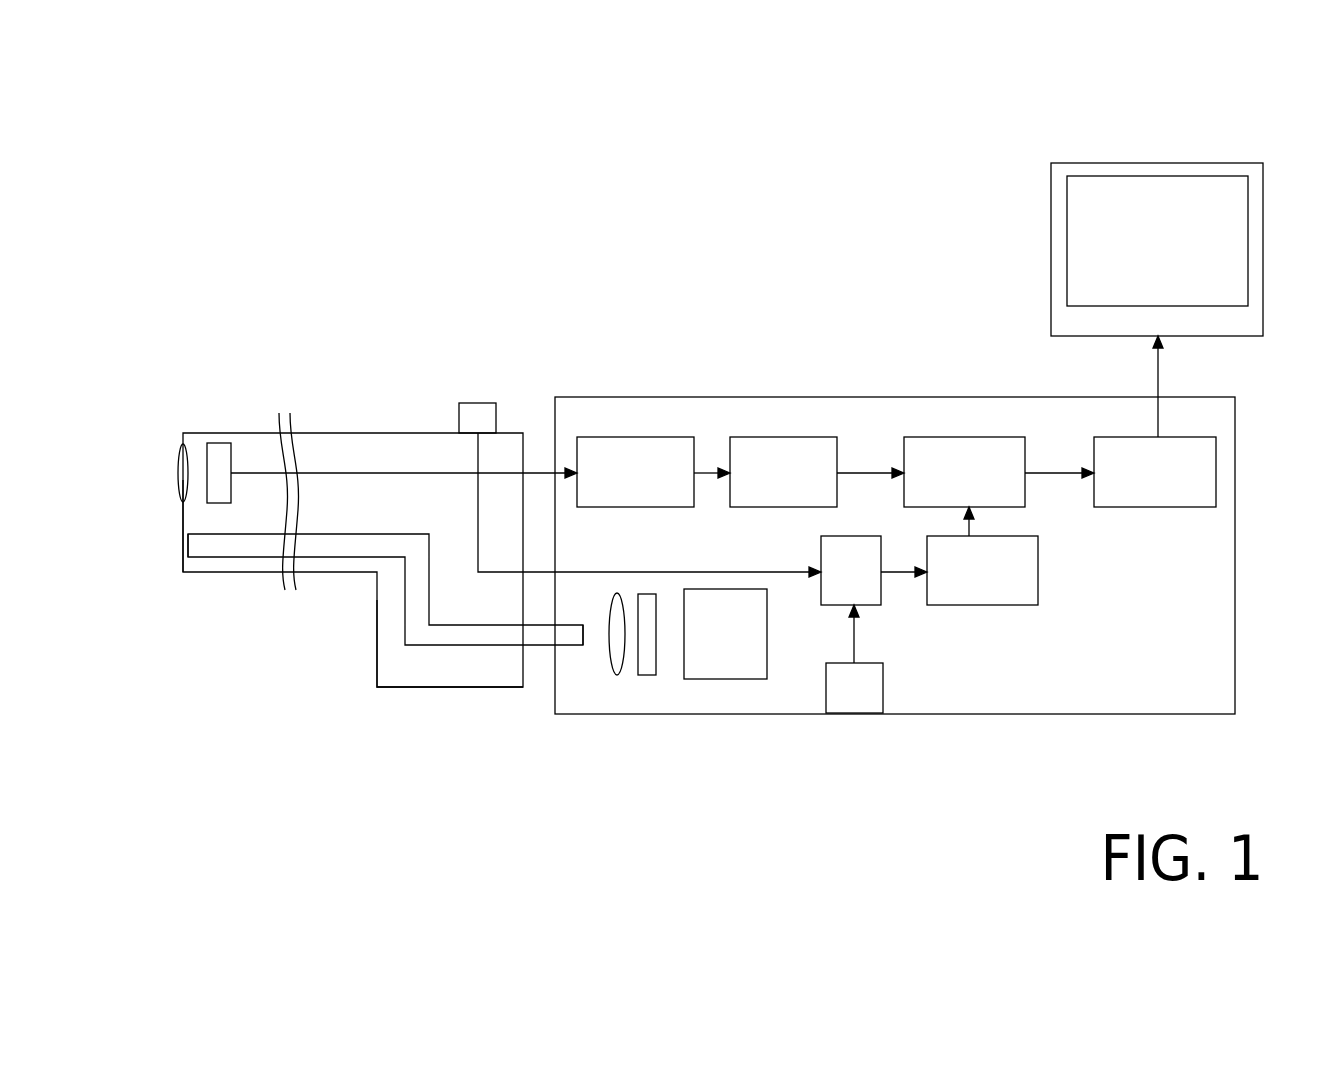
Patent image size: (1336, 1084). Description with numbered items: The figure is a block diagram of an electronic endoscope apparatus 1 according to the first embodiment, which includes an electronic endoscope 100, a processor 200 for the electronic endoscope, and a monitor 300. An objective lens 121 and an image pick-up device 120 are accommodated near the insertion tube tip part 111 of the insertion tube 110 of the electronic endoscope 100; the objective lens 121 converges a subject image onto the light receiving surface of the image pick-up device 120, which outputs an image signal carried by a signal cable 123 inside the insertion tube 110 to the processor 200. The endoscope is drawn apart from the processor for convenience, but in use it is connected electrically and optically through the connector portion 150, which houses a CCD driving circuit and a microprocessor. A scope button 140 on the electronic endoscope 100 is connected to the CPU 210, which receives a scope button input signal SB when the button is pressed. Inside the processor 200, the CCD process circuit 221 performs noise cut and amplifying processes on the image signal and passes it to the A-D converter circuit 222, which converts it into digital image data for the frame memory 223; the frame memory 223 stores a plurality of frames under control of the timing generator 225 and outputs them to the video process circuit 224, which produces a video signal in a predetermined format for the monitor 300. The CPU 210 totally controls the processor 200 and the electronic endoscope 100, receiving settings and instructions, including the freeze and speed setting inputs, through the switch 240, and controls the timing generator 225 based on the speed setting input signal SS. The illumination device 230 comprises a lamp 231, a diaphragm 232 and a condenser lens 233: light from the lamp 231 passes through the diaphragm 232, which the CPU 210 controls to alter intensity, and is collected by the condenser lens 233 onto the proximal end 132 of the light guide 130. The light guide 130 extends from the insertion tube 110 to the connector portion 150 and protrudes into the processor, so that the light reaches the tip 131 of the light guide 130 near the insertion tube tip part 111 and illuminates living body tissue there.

The electronic endoscope apparatus 1 is at (706, 298).
The electronic endoscope 100 is at (376, 420).
The insertion tube 110 is at (251, 433).
The insertion tube tip part 111 is at (183, 520).
The image pick-up device 120 is at (219, 443).
The objective lens 121 is at (172, 477).
The signal cable 123 is at (322, 472).
The light guide 130 is at (302, 558).
The tip of the light guide 131 is at (185, 547).
The proximal end of the light guide 132 is at (583, 636).
The scope button 140 is at (478, 403).
The connector portion 150 is at (452, 688).
The processor for the electronic endoscope 200 is at (851, 386).
The CPU 210 is at (882, 583).
The CCD process circuit 221 is at (632, 437).
The A-D converter circuit 222 is at (783, 437).
The frame memory 223 is at (935, 437).
The video process circuit 224 is at (1152, 507).
The timing generator 225 is at (998, 606).
The illumination device 230 is at (674, 710).
The lamp 231 is at (725, 683).
The diaphragm 232 is at (648, 675).
The condenser lens 233 is at (617, 675).
The switch 240 is at (854, 714).
The monitor 300 is at (1050, 196).